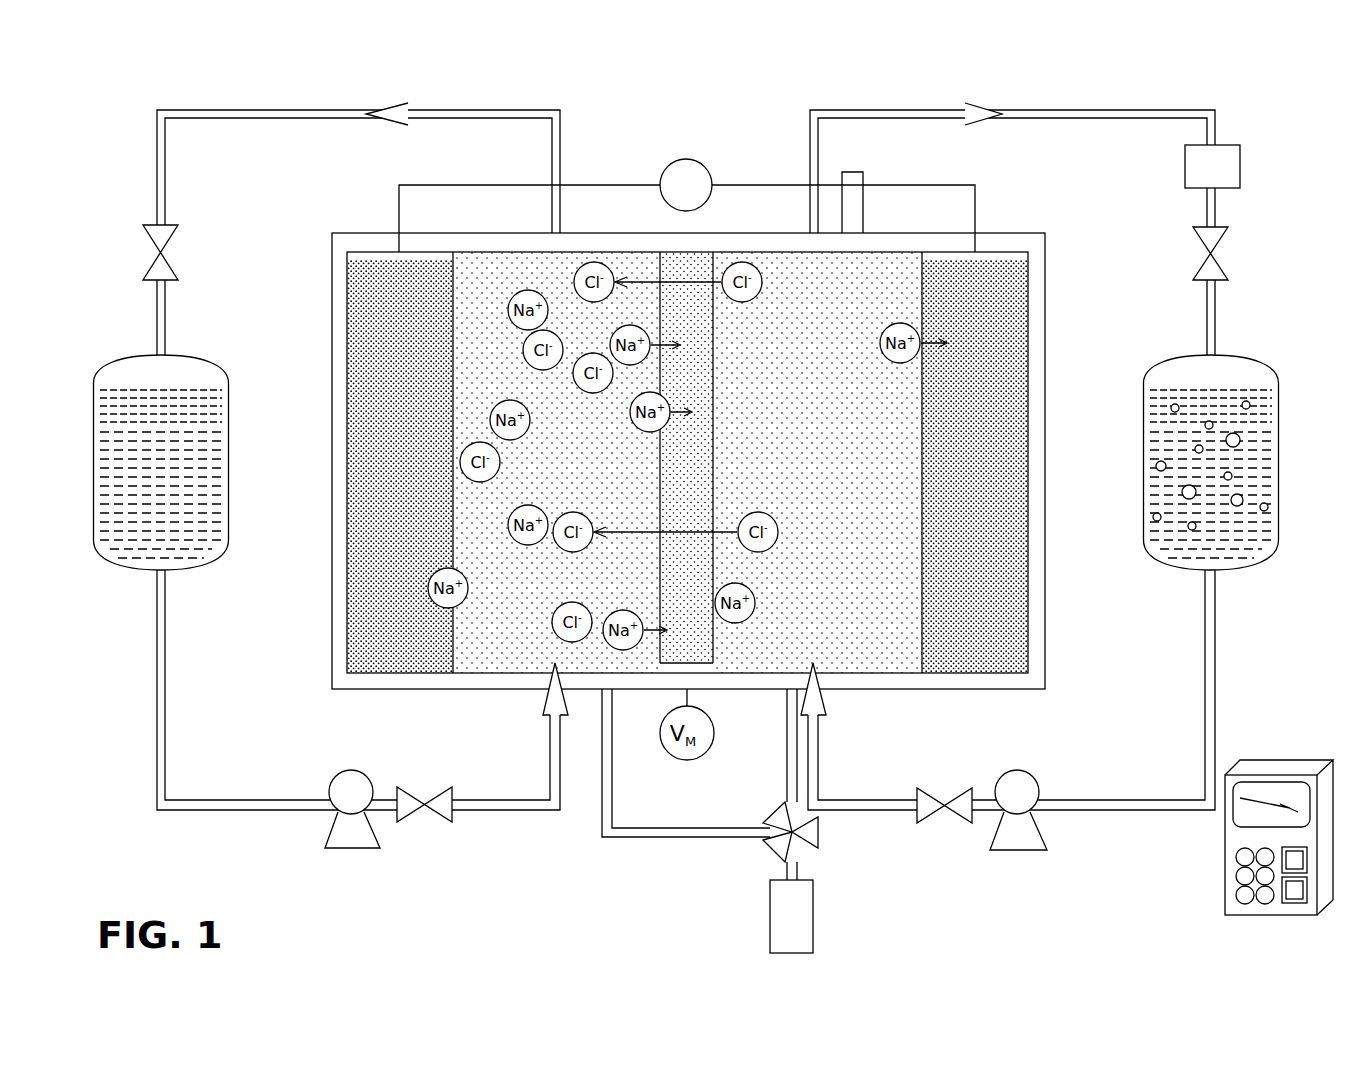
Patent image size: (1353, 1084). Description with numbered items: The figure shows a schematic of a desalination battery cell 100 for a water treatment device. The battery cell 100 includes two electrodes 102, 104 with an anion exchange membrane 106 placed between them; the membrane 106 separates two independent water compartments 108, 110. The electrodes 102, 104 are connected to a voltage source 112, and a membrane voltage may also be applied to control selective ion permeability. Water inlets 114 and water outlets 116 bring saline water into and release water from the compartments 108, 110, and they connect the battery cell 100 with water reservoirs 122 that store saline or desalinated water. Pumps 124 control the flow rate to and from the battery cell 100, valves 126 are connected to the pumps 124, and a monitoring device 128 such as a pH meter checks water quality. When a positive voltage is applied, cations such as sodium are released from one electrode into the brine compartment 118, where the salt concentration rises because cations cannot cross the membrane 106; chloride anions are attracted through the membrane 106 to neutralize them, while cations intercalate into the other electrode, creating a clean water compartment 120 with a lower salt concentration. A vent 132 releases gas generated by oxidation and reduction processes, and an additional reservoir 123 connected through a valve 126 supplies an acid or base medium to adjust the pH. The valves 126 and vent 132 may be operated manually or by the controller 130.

The battery cell 100 is at (1122, 93).
The electrode 102 is at (385, 370).
The electrode 104 is at (990, 370).
The anion exchange membrane 106 is at (688, 268).
The first compartment 108 is at (495, 652).
The second compartment 110 is at (868, 650).
The voltage source 112 is at (687, 158).
The water inlet 114 is at (548, 748).
The water outlet 116 is at (560, 150).
The brine compartment 118 is at (475, 530).
The clean water compartment 120 is at (895, 530).
The water reservoir 122 is at (117, 352).
The additional reservoir 123 is at (815, 925).
The pump 124 is at (352, 850).
The valve 126 is at (155, 222).
The water quality monitoring device 128 is at (1243, 165).
The controller 130 is at (1295, 760).
The vent 132 is at (865, 175).